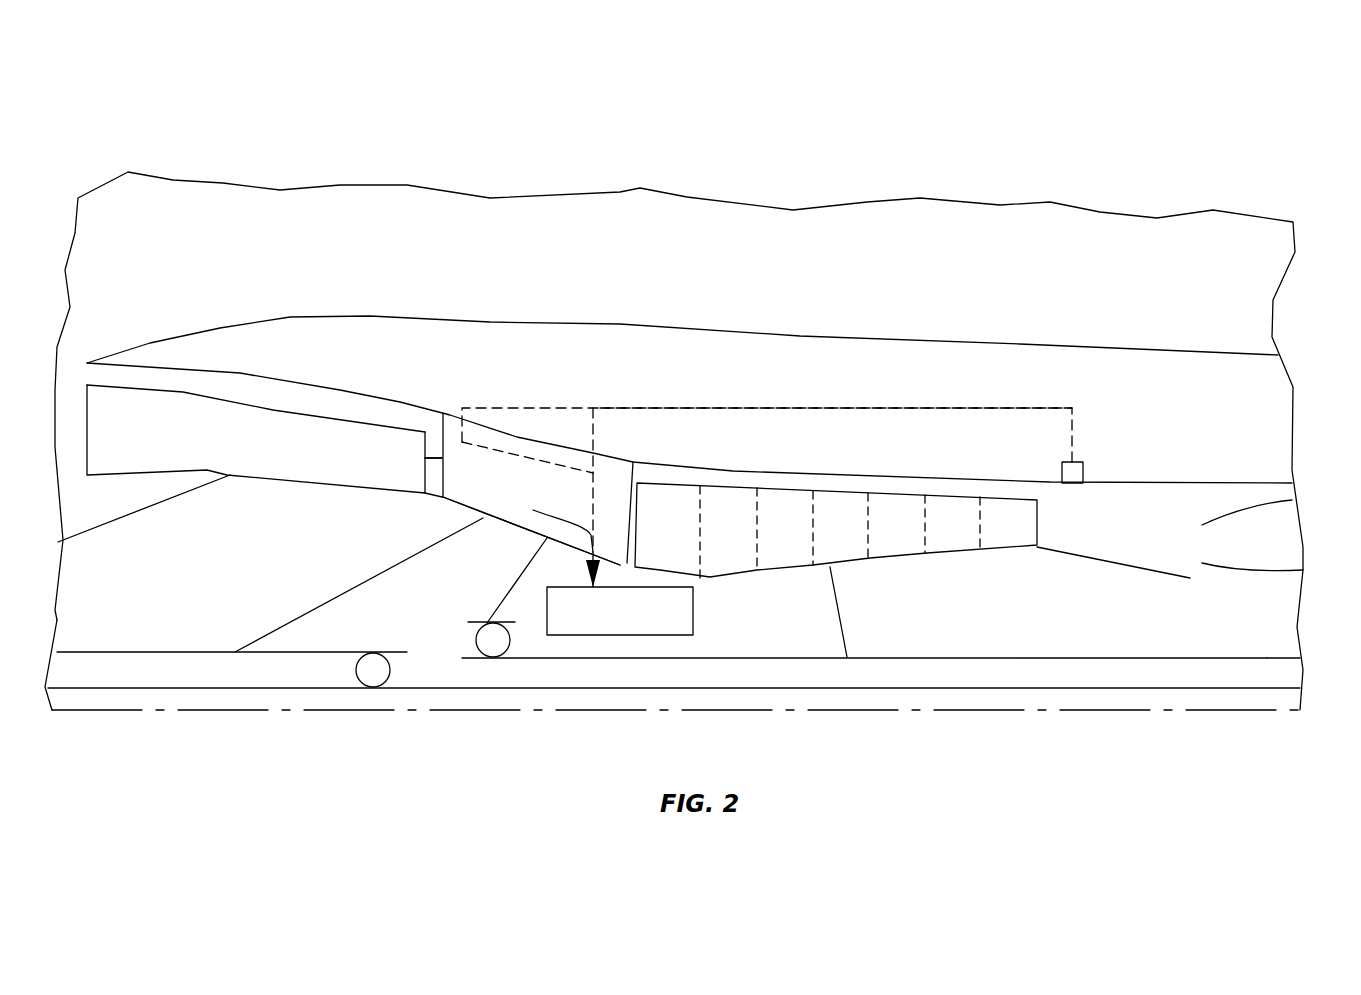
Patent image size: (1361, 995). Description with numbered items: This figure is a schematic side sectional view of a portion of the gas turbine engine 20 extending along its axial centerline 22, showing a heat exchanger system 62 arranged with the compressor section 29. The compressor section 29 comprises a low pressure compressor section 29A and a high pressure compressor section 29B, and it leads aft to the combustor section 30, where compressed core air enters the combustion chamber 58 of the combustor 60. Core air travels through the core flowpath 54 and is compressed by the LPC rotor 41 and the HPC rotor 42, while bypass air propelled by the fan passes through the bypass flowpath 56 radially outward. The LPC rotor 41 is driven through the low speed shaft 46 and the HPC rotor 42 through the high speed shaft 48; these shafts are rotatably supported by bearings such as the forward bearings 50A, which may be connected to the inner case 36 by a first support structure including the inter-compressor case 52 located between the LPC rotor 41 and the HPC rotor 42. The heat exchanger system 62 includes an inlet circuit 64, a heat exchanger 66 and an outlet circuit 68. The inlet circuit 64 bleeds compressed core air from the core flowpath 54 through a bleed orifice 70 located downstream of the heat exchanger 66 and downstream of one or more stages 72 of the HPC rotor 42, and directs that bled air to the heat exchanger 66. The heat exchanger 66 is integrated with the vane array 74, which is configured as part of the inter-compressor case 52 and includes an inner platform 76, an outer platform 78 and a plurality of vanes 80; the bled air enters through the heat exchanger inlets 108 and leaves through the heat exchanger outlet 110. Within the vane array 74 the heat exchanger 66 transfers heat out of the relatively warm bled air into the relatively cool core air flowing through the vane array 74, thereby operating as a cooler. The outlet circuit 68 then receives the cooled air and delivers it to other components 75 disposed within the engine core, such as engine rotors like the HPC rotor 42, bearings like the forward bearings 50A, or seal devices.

The gas turbine engine 20 is at (674, 395).
The axial centerline 22 is at (67, 713).
The compressor section 29 is at (683, 233).
The low pressure compressor section 29A is at (283, 308).
The high pressure compressor section 29B is at (913, 332).
The combustor section 30 is at (1232, 347).
The inner case 36 is at (340, 388).
The LPC rotor 41 is at (130, 517).
The HPC rotor 42 is at (840, 612).
The low speed shaft 46 is at (1267, 655).
The high speed shaft 48 is at (1267, 688).
The forward bearings 50A is at (473, 640).
The inter-compressor case 52 is at (450, 410).
The vane array 74 is at (531, 531).
The core flowpath 54 is at (1157, 517).
The bypass flowpath 56 is at (764, 263).
The combustion chamber 58 is at (1272, 555).
The combustor 60 is at (1240, 503).
The heat exchanger system 62 is at (795, 403).
The inlet circuit 64 is at (1086, 430).
The heat exchanger 66 is at (615, 480).
The outlet circuit 68 is at (568, 563).
The bleed orifice 70 is at (1073, 485).
The stage of HPC rotor 72 is at (682, 538).
The other components 75 is at (633, 622).
The inner platform 76 is at (457, 505).
The outer platform 78 is at (540, 440).
The vanes 80 is at (425, 458).
The heat exchanger inlet 108 is at (463, 418).
The heat exchanger outlet 110 is at (546, 534).